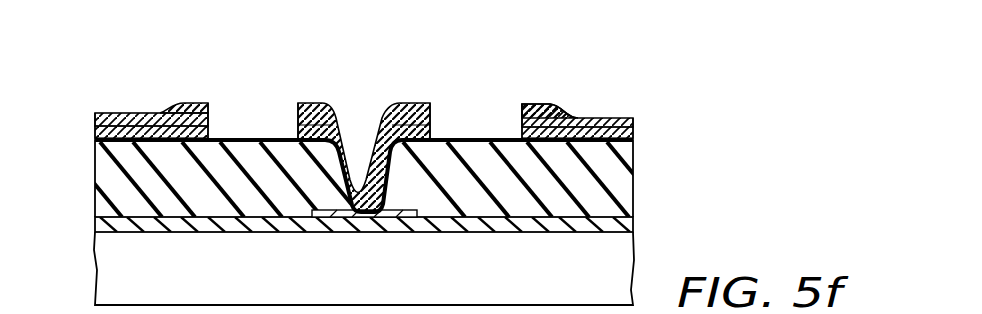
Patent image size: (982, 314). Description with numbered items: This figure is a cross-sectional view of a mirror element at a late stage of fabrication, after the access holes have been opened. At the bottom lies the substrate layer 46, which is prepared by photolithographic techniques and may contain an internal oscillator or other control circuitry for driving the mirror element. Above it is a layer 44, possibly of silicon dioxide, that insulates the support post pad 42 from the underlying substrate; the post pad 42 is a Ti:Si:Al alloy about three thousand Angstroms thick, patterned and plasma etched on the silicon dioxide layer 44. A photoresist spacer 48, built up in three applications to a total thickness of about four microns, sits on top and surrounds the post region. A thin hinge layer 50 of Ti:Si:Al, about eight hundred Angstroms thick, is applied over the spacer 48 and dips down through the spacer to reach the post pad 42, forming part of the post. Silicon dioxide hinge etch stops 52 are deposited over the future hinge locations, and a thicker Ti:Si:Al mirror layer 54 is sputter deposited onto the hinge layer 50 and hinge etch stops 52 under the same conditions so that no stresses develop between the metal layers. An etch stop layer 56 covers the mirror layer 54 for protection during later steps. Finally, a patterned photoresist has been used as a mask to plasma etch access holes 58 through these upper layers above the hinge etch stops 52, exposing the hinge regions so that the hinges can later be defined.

The support post pad 42 is at (352, 218).
The silicon dioxide layer 44 is at (634, 224).
The substrate layer 46 is at (574, 280).
The spacer 48 is at (125, 197).
The hinge layer 50 is at (95, 142).
The hinge etch stops 52 is at (298, 126).
The mirror layer 54 is at (96, 119).
The etch stop layer 56 is at (178, 110).
The plasma etch access holes 58 is at (222, 92).